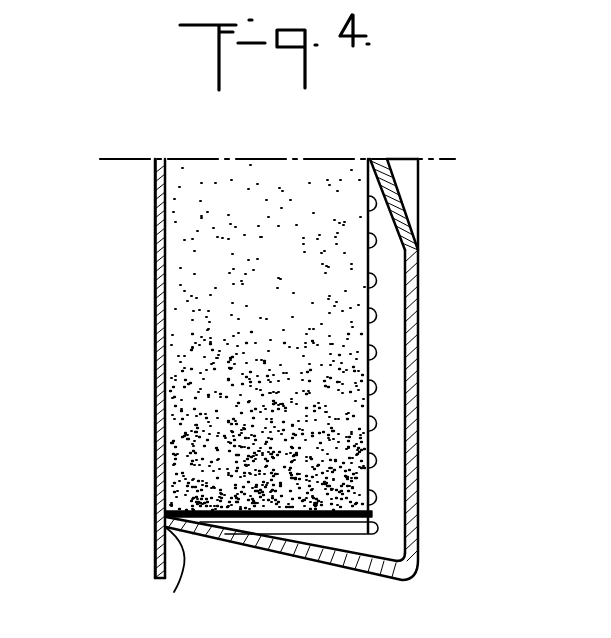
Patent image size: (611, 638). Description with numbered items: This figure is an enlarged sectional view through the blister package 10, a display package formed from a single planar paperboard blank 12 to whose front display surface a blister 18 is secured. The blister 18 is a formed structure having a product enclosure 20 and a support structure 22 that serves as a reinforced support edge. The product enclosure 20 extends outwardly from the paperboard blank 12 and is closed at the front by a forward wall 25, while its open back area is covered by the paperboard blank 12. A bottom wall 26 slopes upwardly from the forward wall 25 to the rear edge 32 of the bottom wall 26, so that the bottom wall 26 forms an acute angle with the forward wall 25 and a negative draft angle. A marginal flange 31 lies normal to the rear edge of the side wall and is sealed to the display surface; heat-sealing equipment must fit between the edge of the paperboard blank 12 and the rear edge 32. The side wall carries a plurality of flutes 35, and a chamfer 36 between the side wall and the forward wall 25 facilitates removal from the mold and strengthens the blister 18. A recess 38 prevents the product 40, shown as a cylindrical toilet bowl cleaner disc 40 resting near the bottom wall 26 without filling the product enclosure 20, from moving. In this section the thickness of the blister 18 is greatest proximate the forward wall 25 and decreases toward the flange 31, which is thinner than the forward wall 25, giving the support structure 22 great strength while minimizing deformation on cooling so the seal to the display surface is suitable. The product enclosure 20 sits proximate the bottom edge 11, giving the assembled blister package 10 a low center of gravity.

The blister package 10 is at (133, 267).
The bottom edge 11 is at (153, 582).
The paperboard blank 12 is at (157, 376).
The blister 18 is at (447, 330).
The product enclosure 20 is at (310, 154).
The support structure 22 is at (409, 578).
The forward wall 25 is at (420, 396).
The bottom wall 26 is at (366, 576).
The marginal flange 31 is at (175, 594).
The rear edge of the bottom wall 32 is at (155, 514).
The flutes 35 is at (378, 529).
The chamfer 36 is at (393, 251).
The recess 38 is at (410, 183).
The toilet bowl cleaner disc 40 is at (280, 229).